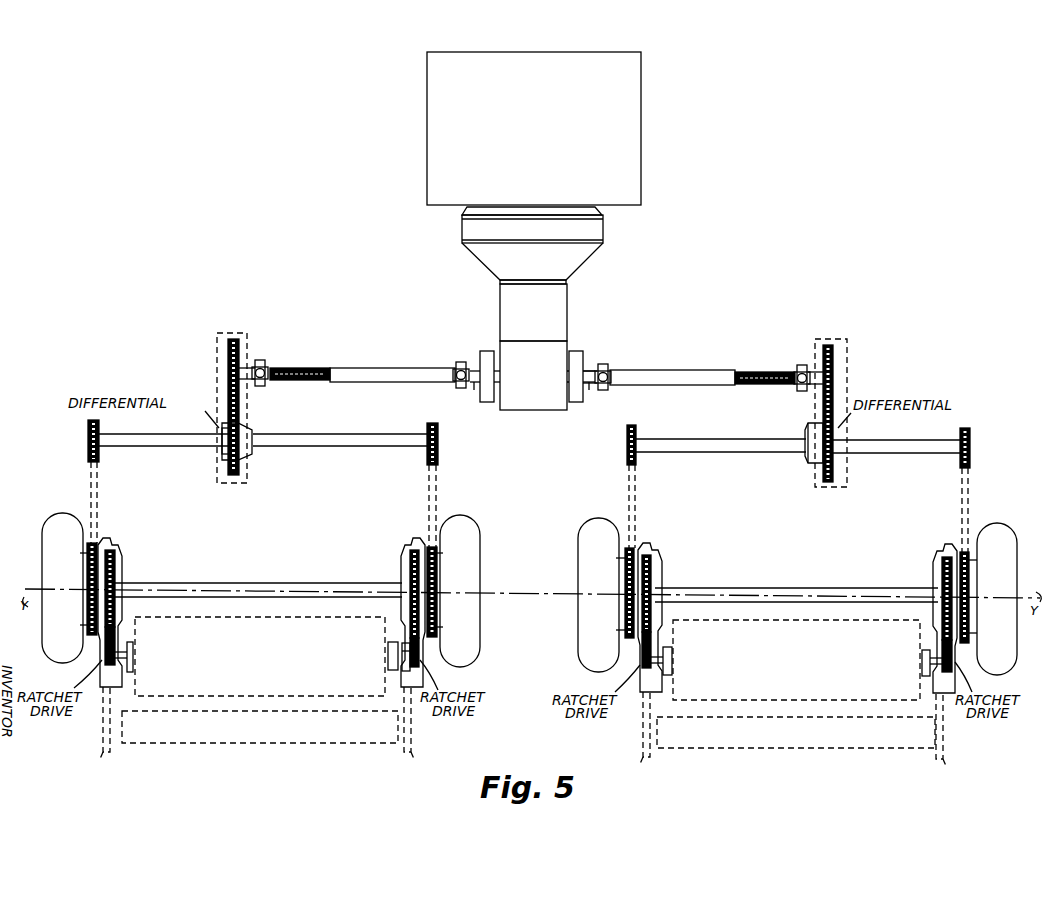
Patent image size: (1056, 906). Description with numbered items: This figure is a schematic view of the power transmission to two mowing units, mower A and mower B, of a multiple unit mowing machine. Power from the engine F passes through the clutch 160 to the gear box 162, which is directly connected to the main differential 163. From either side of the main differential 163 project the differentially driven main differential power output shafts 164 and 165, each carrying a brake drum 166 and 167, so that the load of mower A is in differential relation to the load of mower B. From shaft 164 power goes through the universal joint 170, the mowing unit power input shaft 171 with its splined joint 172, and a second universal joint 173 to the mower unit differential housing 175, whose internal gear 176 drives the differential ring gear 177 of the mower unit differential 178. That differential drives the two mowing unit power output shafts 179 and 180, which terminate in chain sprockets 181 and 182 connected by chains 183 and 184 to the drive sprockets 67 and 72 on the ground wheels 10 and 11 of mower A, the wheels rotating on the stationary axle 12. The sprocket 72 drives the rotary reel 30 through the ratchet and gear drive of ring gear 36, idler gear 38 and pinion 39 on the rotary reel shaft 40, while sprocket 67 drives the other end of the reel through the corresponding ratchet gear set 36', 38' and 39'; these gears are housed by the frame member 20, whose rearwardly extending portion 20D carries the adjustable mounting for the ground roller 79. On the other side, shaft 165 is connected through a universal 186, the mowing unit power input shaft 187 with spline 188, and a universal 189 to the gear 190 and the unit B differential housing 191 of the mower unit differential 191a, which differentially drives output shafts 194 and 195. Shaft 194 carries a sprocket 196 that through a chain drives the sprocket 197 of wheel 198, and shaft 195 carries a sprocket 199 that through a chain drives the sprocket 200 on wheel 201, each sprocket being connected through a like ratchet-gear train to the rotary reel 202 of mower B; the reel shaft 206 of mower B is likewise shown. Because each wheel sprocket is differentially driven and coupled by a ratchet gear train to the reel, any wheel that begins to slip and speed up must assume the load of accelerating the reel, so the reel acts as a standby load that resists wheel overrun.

The engine F is at (641, 141).
The clutch 160 is at (597, 233).
The gear box 162 is at (565, 311).
The main differential 163 is at (538, 403).
The main differential power output shaft 164 is at (472, 390).
The main differential power output shaft 165 is at (588, 390).
The brake drum 166 is at (483, 352).
The brake drum 167 is at (583, 356).
The universal joint 170 is at (456, 362).
The mowing unit power input shaft 171 is at (370, 368).
The splined joint 172 is at (307, 368).
The second universal joint 173 is at (262, 360).
The mower unit differential housing 175 is at (238, 333).
The internal gear 176 is at (227, 355).
The differential ring gear 177 is at (240, 413).
The mower unit differential 178 is at (252, 426).
The mowing unit power output shaft 179 is at (170, 447).
The mowing unit power output shaft 180 is at (308, 447).
The chain sprocket 181 is at (87, 438).
The chain sprocket 182 is at (438, 445).
The chain 183 is at (88, 480).
The chain 184 is at (440, 480).
The universal 186 is at (608, 364).
The mowing unit power input shaft 187 is at (675, 370).
The spline 188 is at (760, 372).
The universal 189 is at (800, 364).
The gear 190 is at (834, 362).
The unit B differential housing 191 is at (840, 340).
The mower unit differential 191a is at (806, 420).
The mower unit power output shaft 194 is at (894, 454).
The mower unit power output shaft 195 is at (744, 453).
The sprocket 196 is at (971, 448).
The sprocket 197 is at (969, 572).
The wheel 198 is at (993, 522).
The sprocket 199 is at (626, 453).
The sprocket 200 is at (637, 546).
The wheel 201 is at (595, 523).
The rotary reel 202 is at (789, 690).
The shaft 206 is at (838, 586).
The ground wheel 10 is at (58, 521).
The ground wheel 11 is at (471, 520).
The axle 12 is at (281, 581).
The frame member 20 is at (122, 566).
The rearwardly extending portion 20D is at (523, 736).
The rotary reel 30 is at (214, 687).
The ring gear 36 is at (662, 589).
The ring gear 36' is at (397, 582).
The idler gear 38 is at (681, 646).
The idler gear 38' is at (404, 645).
The pinion 39 is at (672, 659).
The pinion 39' is at (409, 658).
The rotary reel shaft 40 is at (392, 665).
The sprocket 67 is at (104, 540).
The chain sprocket gear 72 is at (437, 555).
The ground roller 79 is at (272, 750).
The mowing unit A is at (225, 621).
The mowing unit B is at (763, 624).